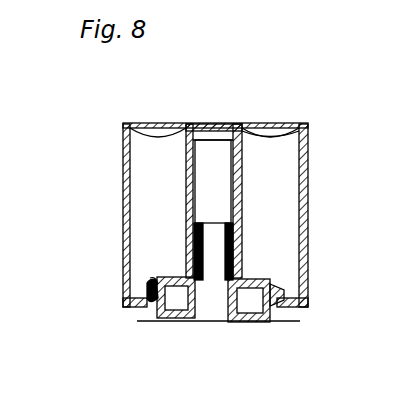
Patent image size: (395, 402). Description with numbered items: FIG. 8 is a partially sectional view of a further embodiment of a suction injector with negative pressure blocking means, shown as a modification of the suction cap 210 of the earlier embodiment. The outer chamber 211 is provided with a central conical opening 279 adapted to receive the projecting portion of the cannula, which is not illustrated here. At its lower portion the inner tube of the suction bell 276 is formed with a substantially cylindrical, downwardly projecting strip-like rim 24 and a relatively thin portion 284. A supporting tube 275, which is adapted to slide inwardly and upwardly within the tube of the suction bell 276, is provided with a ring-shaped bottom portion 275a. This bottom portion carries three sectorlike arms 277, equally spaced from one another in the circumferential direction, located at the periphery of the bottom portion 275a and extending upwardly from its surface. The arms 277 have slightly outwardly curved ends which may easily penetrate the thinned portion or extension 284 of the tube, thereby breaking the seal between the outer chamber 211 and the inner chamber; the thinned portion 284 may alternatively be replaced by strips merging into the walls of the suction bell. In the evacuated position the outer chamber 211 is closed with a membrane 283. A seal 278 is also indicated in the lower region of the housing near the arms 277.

The housing 210 is at (122, 155).
The outer chamber 211 is at (278, 225).
The suction bell 276 is at (236, 182).
The central conical opening 279 is at (232, 125).
The membrane 283 is at (266, 135).
The seal 278 is at (160, 280).
The thinned portion 284 is at (286, 285).
The sectorlike arms 277 is at (152, 317).
The supporting tube 275 is at (215, 320).
The ring-shaped bottom portion 275a is at (250, 323).
The strip-like rim 24 is at (275, 321).